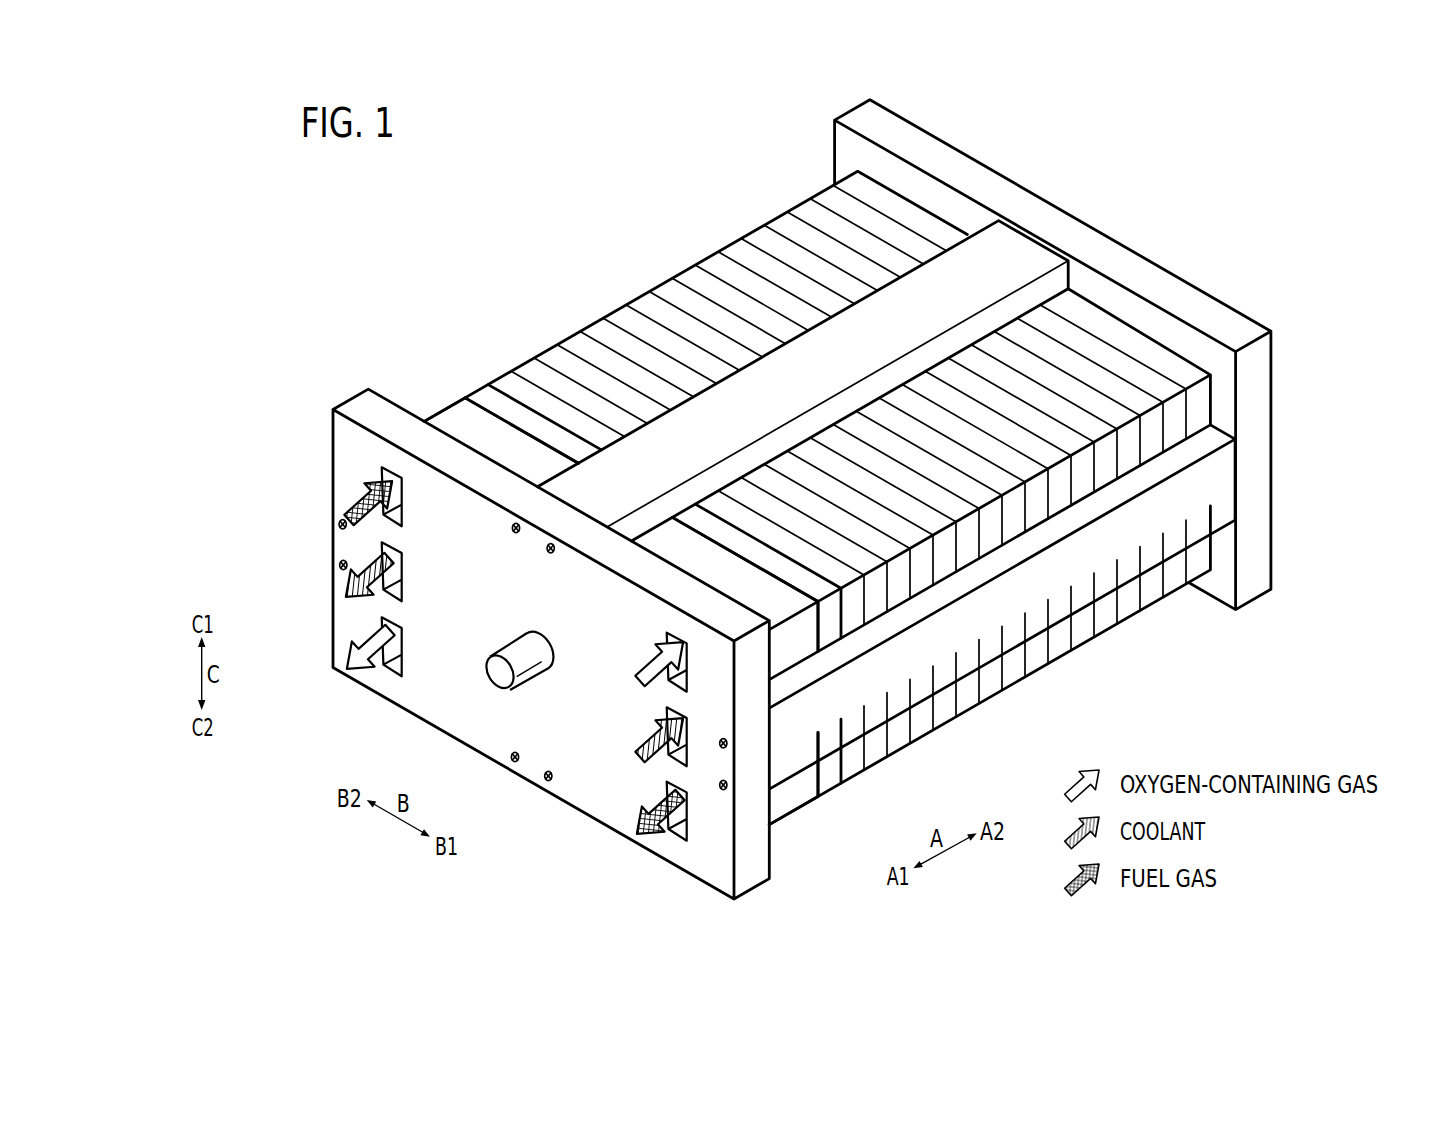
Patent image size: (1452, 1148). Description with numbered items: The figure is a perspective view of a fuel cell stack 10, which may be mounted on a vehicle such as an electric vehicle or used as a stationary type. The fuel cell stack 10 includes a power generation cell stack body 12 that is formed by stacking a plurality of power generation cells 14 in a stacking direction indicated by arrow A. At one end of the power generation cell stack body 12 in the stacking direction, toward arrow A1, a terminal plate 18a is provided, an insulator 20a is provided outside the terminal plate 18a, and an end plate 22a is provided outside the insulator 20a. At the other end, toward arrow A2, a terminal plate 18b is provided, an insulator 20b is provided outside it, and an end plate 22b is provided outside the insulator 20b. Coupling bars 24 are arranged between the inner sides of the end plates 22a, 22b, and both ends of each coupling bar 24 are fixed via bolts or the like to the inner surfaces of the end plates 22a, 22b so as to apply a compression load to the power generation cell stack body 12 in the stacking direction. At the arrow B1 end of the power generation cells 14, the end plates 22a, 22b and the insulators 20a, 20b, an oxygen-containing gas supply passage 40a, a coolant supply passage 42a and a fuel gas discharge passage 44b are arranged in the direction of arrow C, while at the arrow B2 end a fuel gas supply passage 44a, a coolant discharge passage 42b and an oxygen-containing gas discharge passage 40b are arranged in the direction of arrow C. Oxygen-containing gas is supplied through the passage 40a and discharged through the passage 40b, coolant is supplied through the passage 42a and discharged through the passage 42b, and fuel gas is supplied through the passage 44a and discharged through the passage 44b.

The fuel cell stack 10 is at (1262, 136).
The power generation cell stack body 12 is at (888, 518).
The power generation cell 14 is at (602, 327).
The terminal plate 18a is at (827, 782).
The terminal plate 18b is at (1150, 593).
The insulator 20a is at (797, 800).
The insulator 20b is at (1197, 558).
The end plate 22a is at (693, 857).
The end plate 22b is at (1262, 530).
The coupling bar 24 is at (1035, 252).
The oxygen-containing gas supply passage 40a is at (670, 639).
The oxygen-containing gas discharge passage 40b is at (387, 627).
The coolant supply passage 42a is at (670, 715).
The coolant discharge passage 42b is at (383, 552).
The fuel gas supply passage 44a is at (383, 477).
The fuel gas discharge passage 44b is at (670, 789).